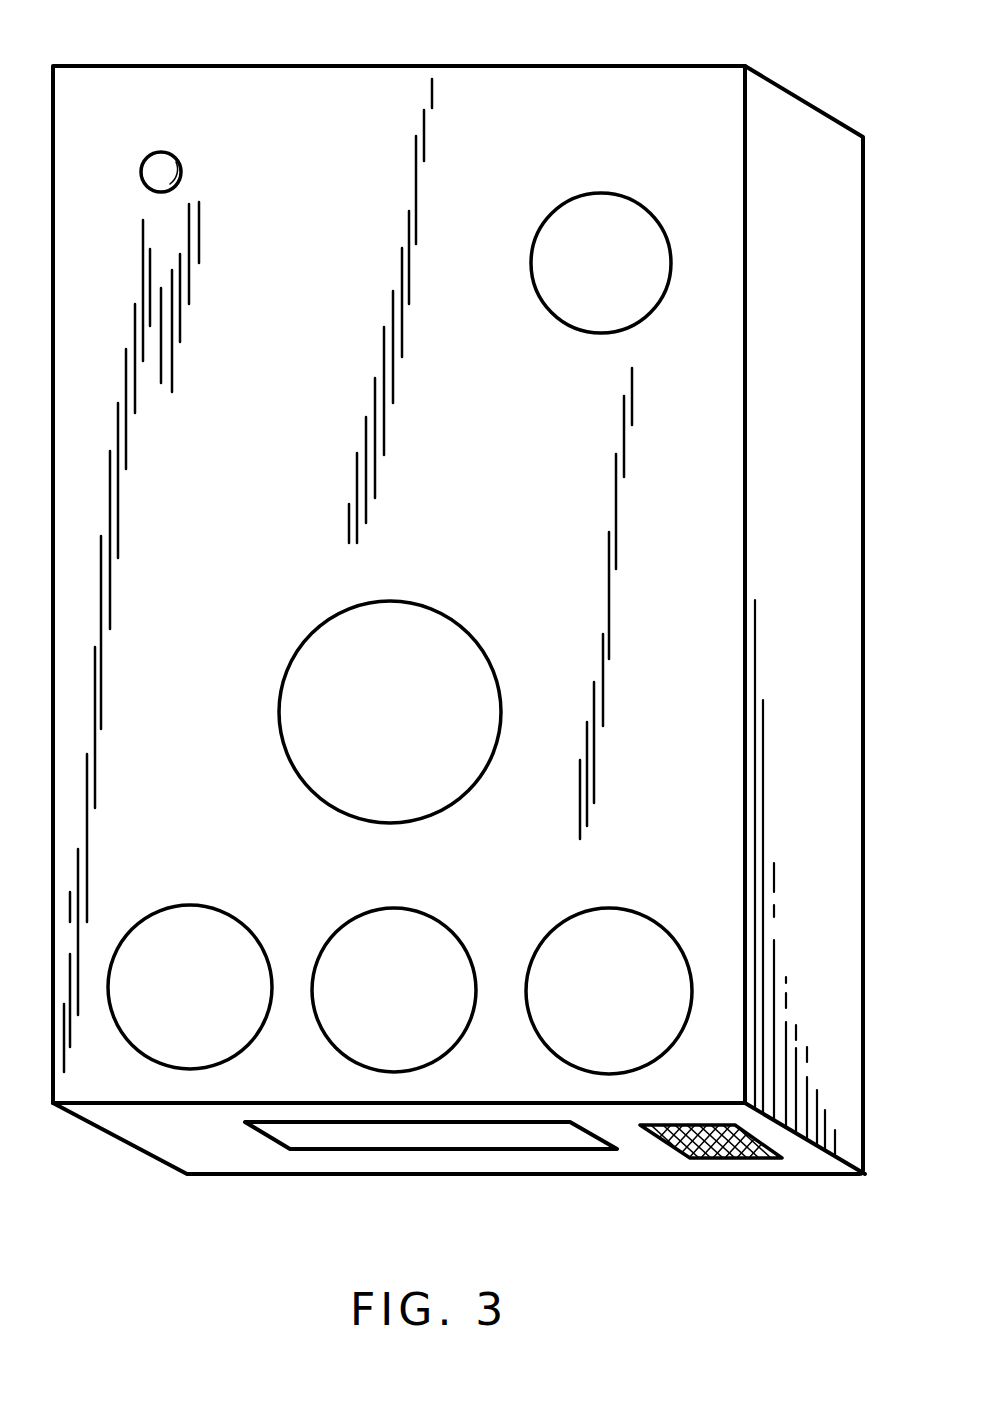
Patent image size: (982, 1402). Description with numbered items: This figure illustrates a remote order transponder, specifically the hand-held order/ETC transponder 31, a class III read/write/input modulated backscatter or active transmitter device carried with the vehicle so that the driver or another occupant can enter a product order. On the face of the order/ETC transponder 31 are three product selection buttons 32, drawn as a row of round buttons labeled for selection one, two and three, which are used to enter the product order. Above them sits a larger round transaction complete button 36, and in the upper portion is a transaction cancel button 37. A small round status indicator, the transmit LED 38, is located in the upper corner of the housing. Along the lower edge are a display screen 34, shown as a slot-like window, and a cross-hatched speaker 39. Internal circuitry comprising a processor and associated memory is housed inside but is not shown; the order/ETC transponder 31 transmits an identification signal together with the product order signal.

The order/ETC transponder 31 is at (500, 55).
The product selection buttons 32 is at (217, 905).
The display screen 34 is at (360, 1152).
The transaction complete button 36 is at (474, 643).
The transaction cancel button 37 is at (537, 221).
The transmit LED 38 is at (180, 160).
The speaker 39 is at (732, 1160).